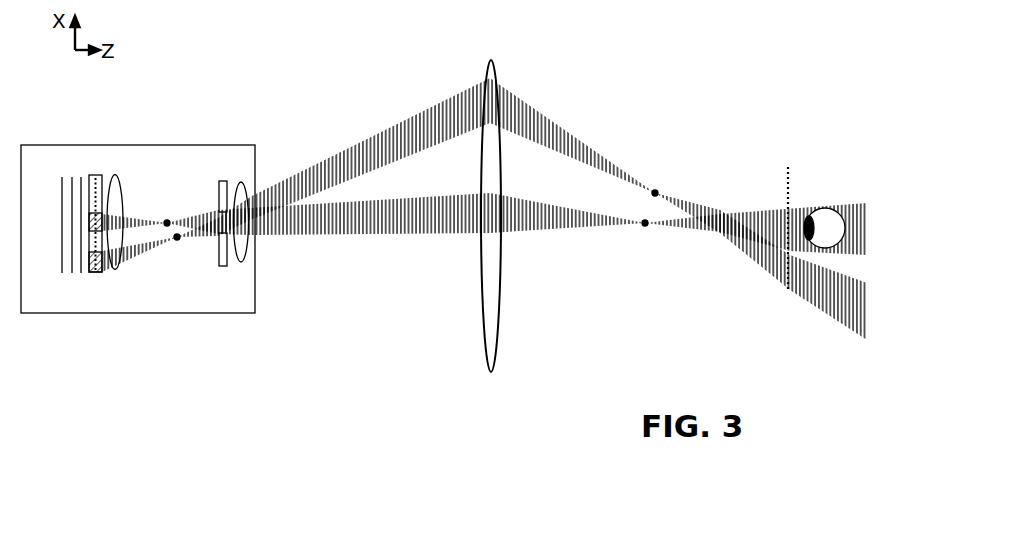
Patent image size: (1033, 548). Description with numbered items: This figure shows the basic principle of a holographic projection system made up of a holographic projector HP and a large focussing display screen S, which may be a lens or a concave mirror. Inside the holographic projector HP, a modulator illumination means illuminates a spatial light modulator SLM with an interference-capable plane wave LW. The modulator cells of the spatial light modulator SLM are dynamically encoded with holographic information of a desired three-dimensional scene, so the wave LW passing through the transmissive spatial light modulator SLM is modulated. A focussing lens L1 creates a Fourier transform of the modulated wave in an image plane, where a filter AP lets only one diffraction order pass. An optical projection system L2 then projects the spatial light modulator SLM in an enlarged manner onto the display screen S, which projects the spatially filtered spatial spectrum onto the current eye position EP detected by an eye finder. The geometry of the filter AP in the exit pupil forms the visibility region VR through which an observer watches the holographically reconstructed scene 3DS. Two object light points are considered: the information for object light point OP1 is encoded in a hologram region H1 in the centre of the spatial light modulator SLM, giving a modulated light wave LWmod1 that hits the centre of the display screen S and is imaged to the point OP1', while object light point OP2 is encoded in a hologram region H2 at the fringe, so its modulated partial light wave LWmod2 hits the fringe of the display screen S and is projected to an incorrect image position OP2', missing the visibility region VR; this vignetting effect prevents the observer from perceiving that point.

The holographic projector HP is at (138, 229).
The plane wave LW is at (52, 233).
The spatial light modulator SLM is at (72, 240).
The hologram region H1 is at (89, 221).
The hologram region H2 is at (100, 272).
The focussing lens L1 is at (119, 212).
The optical projection system L2 is at (233, 243).
The filter AP is at (206, 218).
The object light point OP1 is at (141, 209).
The object light point OP2 is at (155, 256).
The modulated light wave LWmod1 is at (406, 243).
The modulated partial light wave LWmod2 is at (416, 157).
The focussing display screen S is at (479, 216).
The holographically reconstructed scene 3DS is at (737, 232).
The image of object light point OP1' is at (741, 240).
The image of object light point OP2' is at (759, 248).
The visibility region VR is at (806, 227).
The eye position EP is at (804, 231).